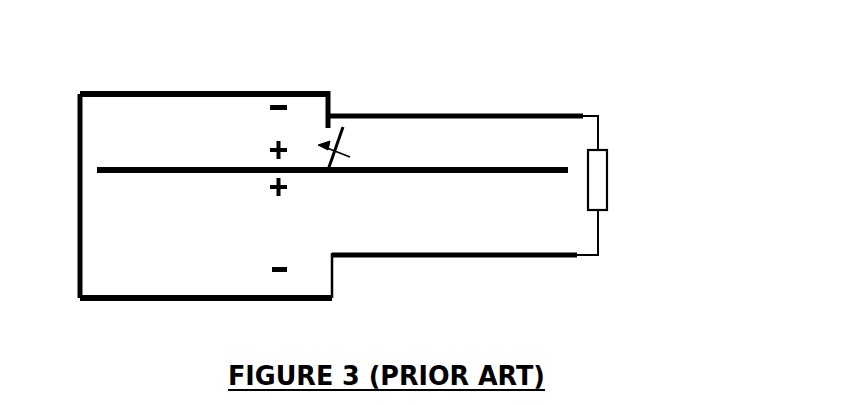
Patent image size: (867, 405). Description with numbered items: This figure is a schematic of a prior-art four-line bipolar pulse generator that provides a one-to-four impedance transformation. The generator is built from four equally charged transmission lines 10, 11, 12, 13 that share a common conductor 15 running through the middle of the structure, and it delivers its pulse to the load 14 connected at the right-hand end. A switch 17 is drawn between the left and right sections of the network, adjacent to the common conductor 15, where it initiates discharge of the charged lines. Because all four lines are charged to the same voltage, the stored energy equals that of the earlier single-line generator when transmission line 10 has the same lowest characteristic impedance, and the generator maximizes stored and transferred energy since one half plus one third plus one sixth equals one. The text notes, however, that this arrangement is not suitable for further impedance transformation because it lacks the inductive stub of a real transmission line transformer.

The transmission line 10 is at (510, 130).
The transmission line 11 is at (235, 112).
The transmission line 12 is at (130, 267).
The transmission line 13 is at (378, 240).
The load 14 is at (617, 208).
The common conductor 15 is at (368, 158).
The switch 17 is at (337, 95).